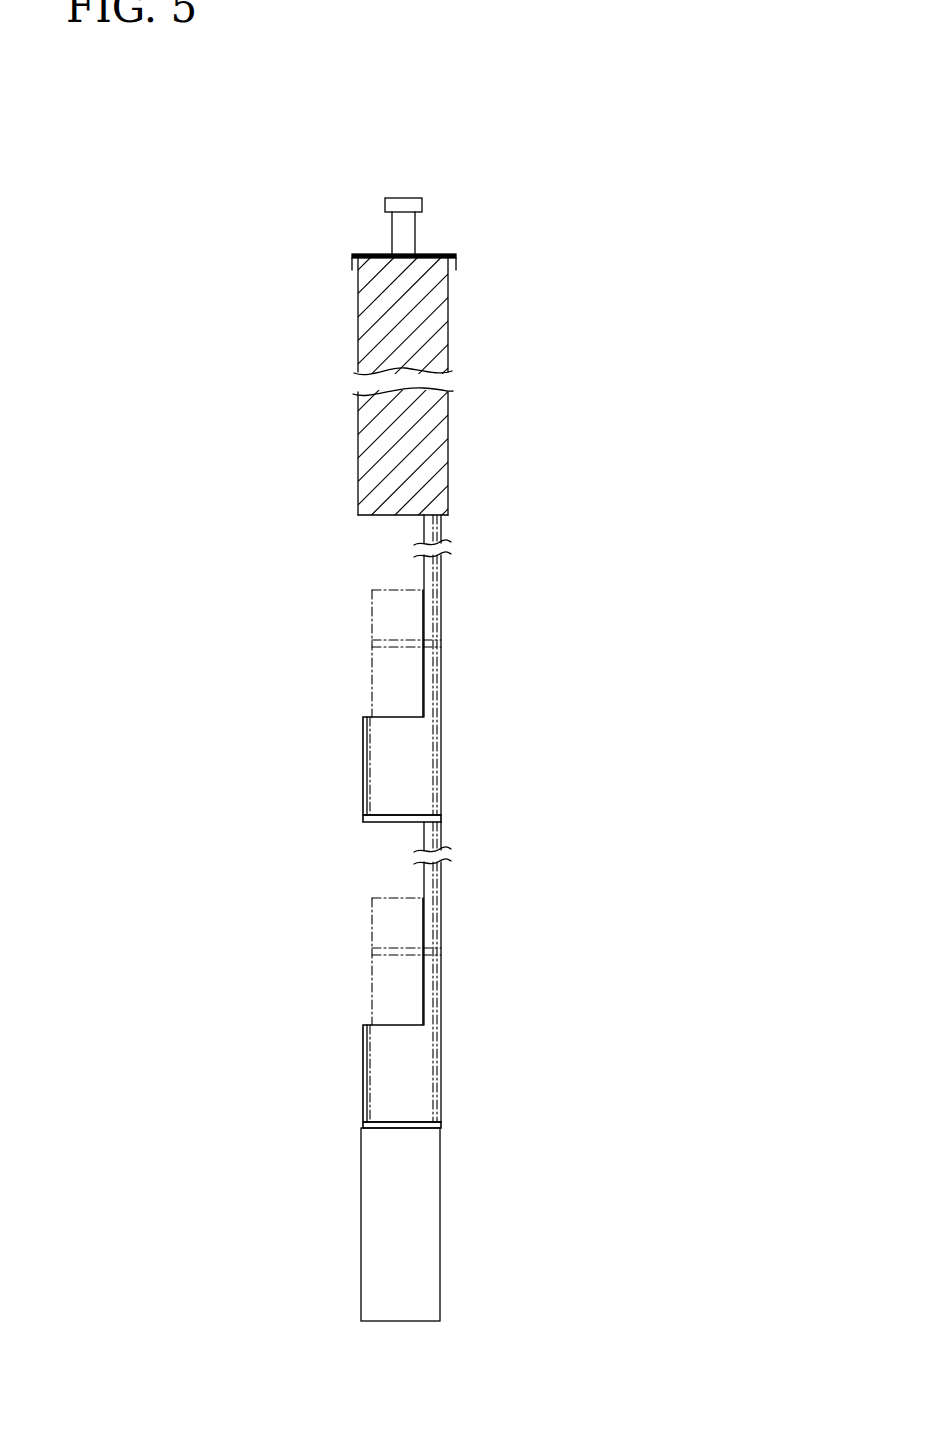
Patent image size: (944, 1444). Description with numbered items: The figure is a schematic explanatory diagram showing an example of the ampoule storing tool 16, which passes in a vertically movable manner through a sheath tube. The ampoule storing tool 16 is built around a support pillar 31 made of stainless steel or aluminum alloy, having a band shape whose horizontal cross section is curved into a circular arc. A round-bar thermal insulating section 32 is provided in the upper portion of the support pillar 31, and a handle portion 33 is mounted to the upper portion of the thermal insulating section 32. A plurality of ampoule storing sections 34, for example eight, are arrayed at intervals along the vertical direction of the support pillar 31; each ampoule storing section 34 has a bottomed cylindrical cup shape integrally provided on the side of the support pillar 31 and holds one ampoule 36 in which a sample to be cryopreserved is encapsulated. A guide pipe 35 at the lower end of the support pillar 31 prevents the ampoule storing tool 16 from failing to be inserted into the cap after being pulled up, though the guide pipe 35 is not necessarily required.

The ampoule storing tool 16 is at (500, 476).
The support pillar 31 is at (433, 570).
The thermal insulating section 32 is at (437, 322).
The handle portion 33 is at (404, 205).
The ampoule storing section 34 is at (420, 760).
The guide pipe 35 is at (417, 1240).
The ampoule 36 is at (380, 675).